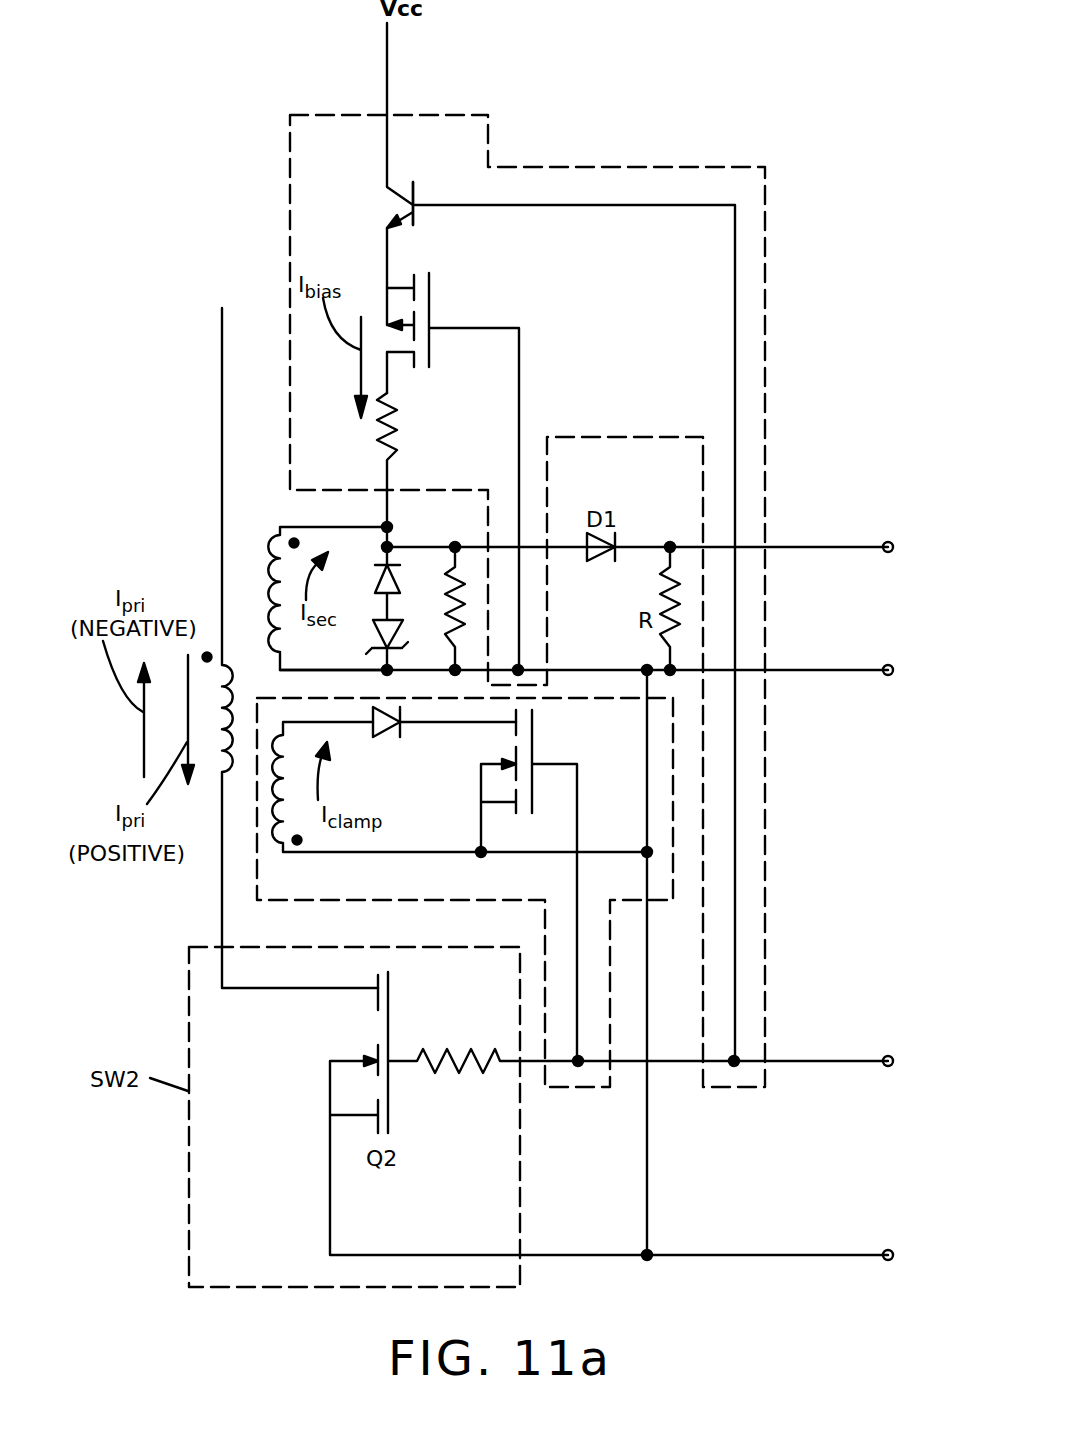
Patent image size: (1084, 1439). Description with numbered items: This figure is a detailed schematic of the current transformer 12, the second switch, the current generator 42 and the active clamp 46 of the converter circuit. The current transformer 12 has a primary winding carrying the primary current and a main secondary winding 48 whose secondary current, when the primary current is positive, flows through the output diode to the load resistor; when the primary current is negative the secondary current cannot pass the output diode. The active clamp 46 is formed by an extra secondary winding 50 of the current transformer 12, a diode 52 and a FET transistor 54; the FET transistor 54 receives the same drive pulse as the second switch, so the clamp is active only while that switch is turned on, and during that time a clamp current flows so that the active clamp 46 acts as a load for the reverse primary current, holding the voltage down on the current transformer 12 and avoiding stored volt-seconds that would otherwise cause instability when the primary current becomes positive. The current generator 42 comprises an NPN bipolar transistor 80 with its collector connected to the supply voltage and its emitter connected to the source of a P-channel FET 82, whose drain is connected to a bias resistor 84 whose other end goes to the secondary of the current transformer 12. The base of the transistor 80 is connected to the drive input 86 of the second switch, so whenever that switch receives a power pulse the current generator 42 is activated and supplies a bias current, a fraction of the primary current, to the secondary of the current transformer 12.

The current transformer 12 is at (200, 478).
The current generator 42 is at (490, 132).
The active clamp 46 is at (375, 898).
The main secondary winding 48 is at (272, 548).
The extra secondary winding 50 is at (270, 836).
The diode 52 is at (380, 737).
The FET transistor 54 is at (538, 746).
The NPN bipolar transistor 80 is at (414, 202).
The P-channel FET 82 is at (416, 273).
The bias resistor 84 is at (397, 433).
The drive input 86 is at (848, 1162).